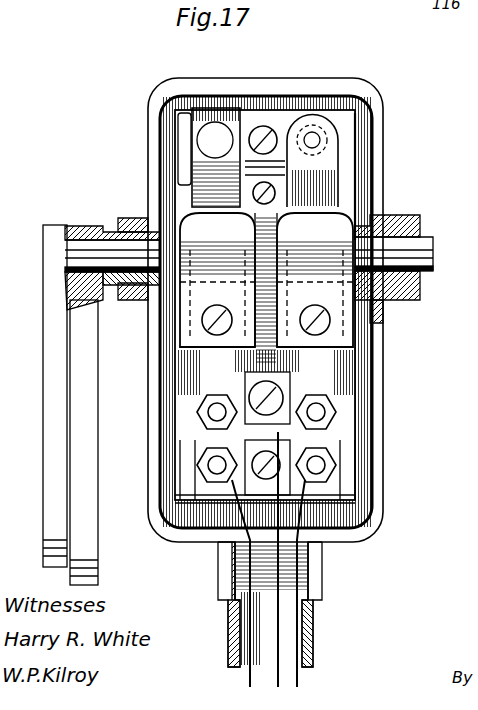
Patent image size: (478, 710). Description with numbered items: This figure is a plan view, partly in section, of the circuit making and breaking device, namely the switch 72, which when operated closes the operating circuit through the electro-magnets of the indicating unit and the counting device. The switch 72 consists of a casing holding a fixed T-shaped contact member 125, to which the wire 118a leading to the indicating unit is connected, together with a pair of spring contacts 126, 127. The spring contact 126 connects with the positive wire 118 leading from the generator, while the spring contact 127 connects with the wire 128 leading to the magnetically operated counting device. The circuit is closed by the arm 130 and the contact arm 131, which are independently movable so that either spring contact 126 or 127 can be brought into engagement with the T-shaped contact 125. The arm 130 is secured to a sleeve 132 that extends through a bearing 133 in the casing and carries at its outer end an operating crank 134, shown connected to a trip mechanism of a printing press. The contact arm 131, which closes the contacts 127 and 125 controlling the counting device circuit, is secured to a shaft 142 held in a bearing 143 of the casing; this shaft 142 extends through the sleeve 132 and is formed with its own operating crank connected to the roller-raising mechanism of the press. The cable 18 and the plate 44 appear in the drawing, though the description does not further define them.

The cable 18 is at (282, 63).
The T-shaped contact member 125 is at (275, 118).
The switch 72 is at (372, 212).
The contact arm 131 is at (338, 225).
The supporting plate 44 is at (47, 368).
The operating crank 134 is at (98, 395).
The sleeve 132 is at (105, 228).
The bearing 133 is at (130, 217).
The shaft 142 is at (410, 272).
The bearing 143 is at (396, 302).
The spring contact 126 is at (188, 136).
The arm 130 is at (188, 165).
The spring contact 127 is at (338, 160).
The positive wire 118 is at (249, 670).
The wire 118a is at (287, 672).
The wire 128 is at (297, 685).